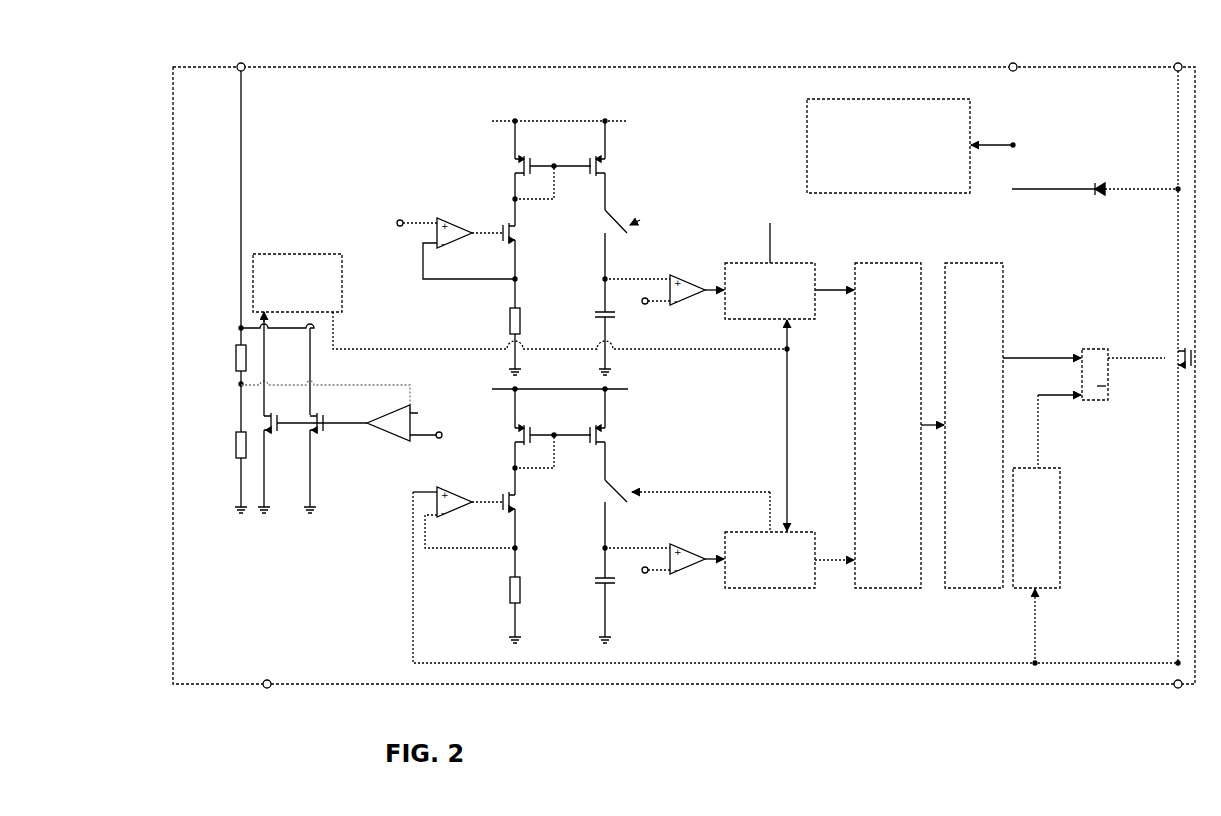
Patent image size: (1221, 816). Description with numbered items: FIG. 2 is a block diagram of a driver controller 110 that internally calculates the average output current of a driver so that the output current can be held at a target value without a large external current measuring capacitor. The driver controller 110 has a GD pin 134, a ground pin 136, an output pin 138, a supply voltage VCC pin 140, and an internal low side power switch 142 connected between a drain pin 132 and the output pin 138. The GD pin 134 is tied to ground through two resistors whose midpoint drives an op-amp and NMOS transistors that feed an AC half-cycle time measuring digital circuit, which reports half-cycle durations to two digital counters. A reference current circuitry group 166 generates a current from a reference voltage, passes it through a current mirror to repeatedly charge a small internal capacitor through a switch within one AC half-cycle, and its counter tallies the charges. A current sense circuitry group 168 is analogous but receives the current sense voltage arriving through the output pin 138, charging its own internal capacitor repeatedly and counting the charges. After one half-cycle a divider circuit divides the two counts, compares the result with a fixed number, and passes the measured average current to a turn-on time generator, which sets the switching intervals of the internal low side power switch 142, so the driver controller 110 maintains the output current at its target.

The driver controller 110 is at (1008, 735).
The drain pin 132 is at (1175, 65).
The GD pin 134 is at (246, 64).
The ground pin 136 is at (271, 687).
The output pin 138 is at (1175, 687).
The supply voltage VCC pin 140 is at (1010, 65).
The internal low side power switch 142 is at (1172, 378).
The reference current circuitry group 166 is at (418, 130).
The current sense circuitry group 168 is at (705, 415).